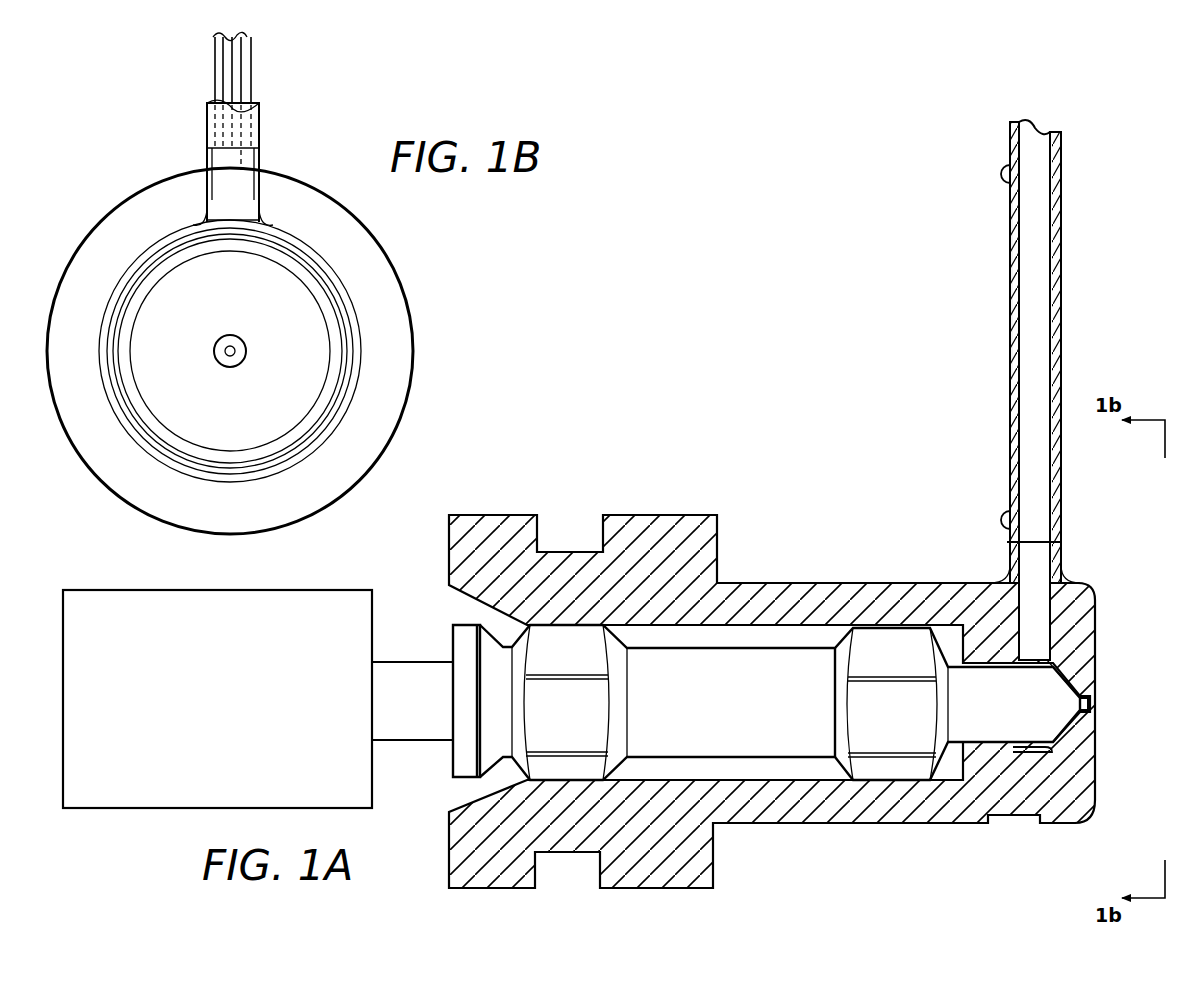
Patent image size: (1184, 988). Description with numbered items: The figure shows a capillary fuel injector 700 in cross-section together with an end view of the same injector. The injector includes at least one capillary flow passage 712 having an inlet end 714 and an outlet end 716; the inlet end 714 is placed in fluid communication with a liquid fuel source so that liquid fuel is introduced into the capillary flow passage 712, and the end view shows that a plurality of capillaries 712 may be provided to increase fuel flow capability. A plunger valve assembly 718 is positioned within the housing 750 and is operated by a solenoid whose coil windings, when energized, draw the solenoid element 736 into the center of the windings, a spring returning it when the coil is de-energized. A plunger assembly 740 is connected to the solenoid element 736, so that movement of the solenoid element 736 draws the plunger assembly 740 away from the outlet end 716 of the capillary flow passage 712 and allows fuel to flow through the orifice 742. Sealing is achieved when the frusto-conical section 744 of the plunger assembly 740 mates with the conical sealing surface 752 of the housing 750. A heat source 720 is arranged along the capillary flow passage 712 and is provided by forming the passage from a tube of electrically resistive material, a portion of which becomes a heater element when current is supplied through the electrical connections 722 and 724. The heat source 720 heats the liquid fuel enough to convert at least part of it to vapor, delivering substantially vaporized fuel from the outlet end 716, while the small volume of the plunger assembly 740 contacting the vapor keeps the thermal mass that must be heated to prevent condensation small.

In FIG. 1A, the capillary fuel injector 700 is at (773, 452).
In FIG. 1B, the capillary flow passage 712 is at (214, 75).
In FIG. 1A, the capillary flow passage 712 is at (1011, 289).
In FIG. 1A, the inlet end 714 is at (1012, 142).
In FIG. 1A, the outlet end 716 is at (1060, 541).
In FIG. 1A, the plunger valve assembly 718 is at (903, 635).
In FIG. 1A, the heat source 720 is at (1065, 350).
In FIG. 1A, the electrical connection 722 is at (998, 517).
In FIG. 1A, the electrical connection 724 is at (1002, 174).
In FIG. 1A, the solenoid element 736 is at (285, 590).
In FIG. 1A, the plunger assembly 740 is at (993, 747).
In FIG. 1B, the orifice 742 is at (238, 357).
In FIG. 1A, the orifice 742 is at (1088, 718).
In FIG. 1A, the frusto-conical section 744 is at (1063, 740).
In FIG. 1A, the housing 750 is at (722, 583).
In FIG. 1A, the conical sealing surface 752 is at (1083, 654).